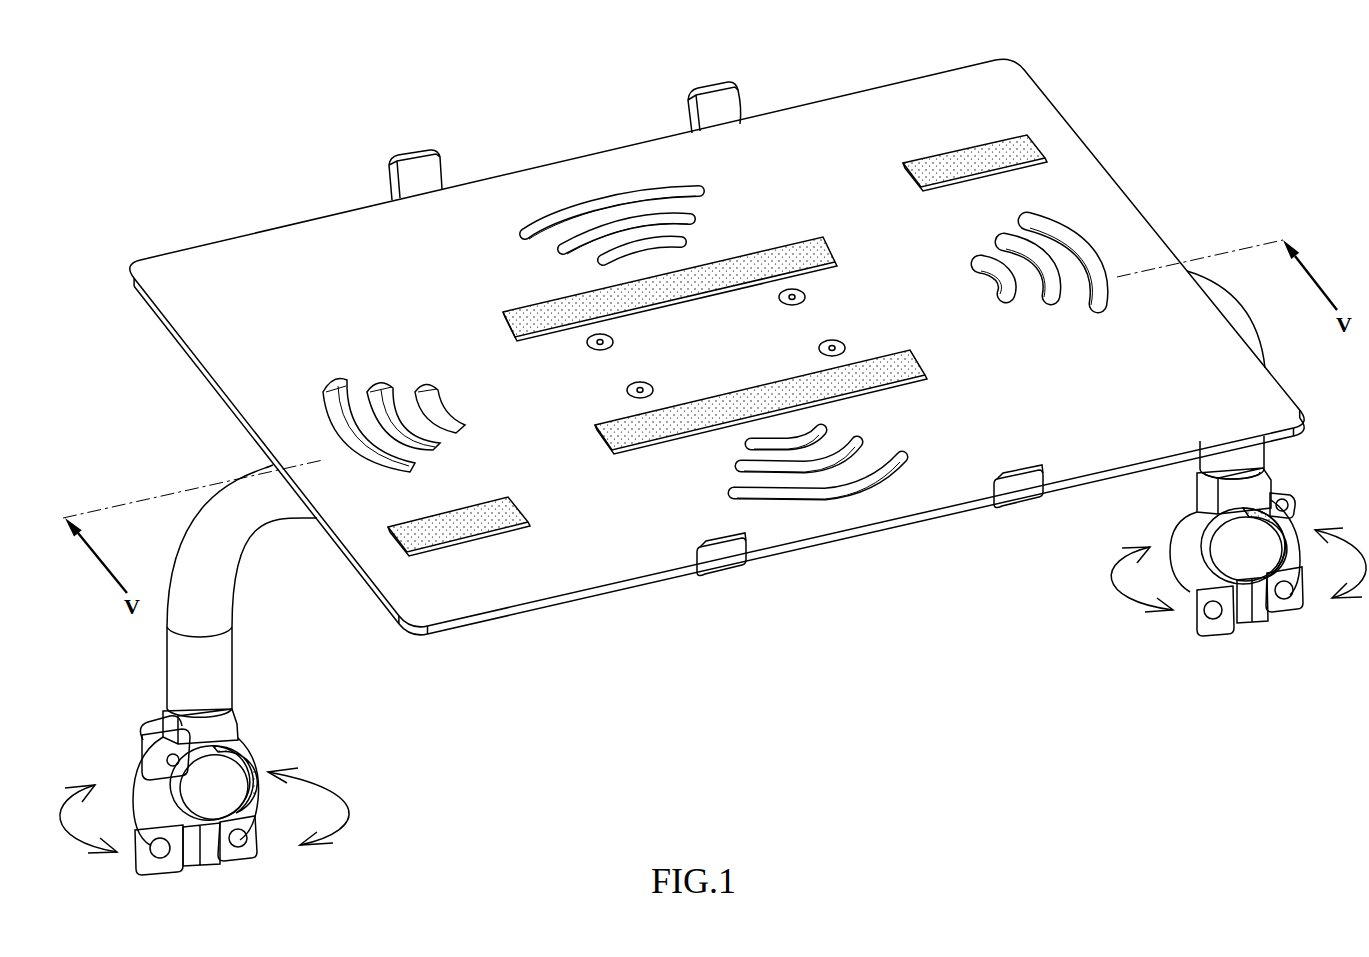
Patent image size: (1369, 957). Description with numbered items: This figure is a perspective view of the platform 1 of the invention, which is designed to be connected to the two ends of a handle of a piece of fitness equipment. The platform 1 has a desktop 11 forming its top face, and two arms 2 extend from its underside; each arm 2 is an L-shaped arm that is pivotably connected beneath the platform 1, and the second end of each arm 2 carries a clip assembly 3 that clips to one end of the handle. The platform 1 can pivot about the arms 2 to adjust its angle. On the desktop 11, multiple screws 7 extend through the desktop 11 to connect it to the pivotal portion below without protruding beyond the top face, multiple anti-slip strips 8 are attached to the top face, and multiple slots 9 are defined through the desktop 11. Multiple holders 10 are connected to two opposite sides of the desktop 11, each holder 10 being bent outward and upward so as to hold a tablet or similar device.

The platform 1 is at (252, 144).
The arm 2 is at (162, 520).
The clip assembly 3 is at (114, 745).
The screw 7 is at (792, 290).
The anti-slip strip 8 is at (952, 160).
The slot 9 is at (583, 240).
The holder 10 is at (417, 178).
The desktop 11 is at (215, 268).